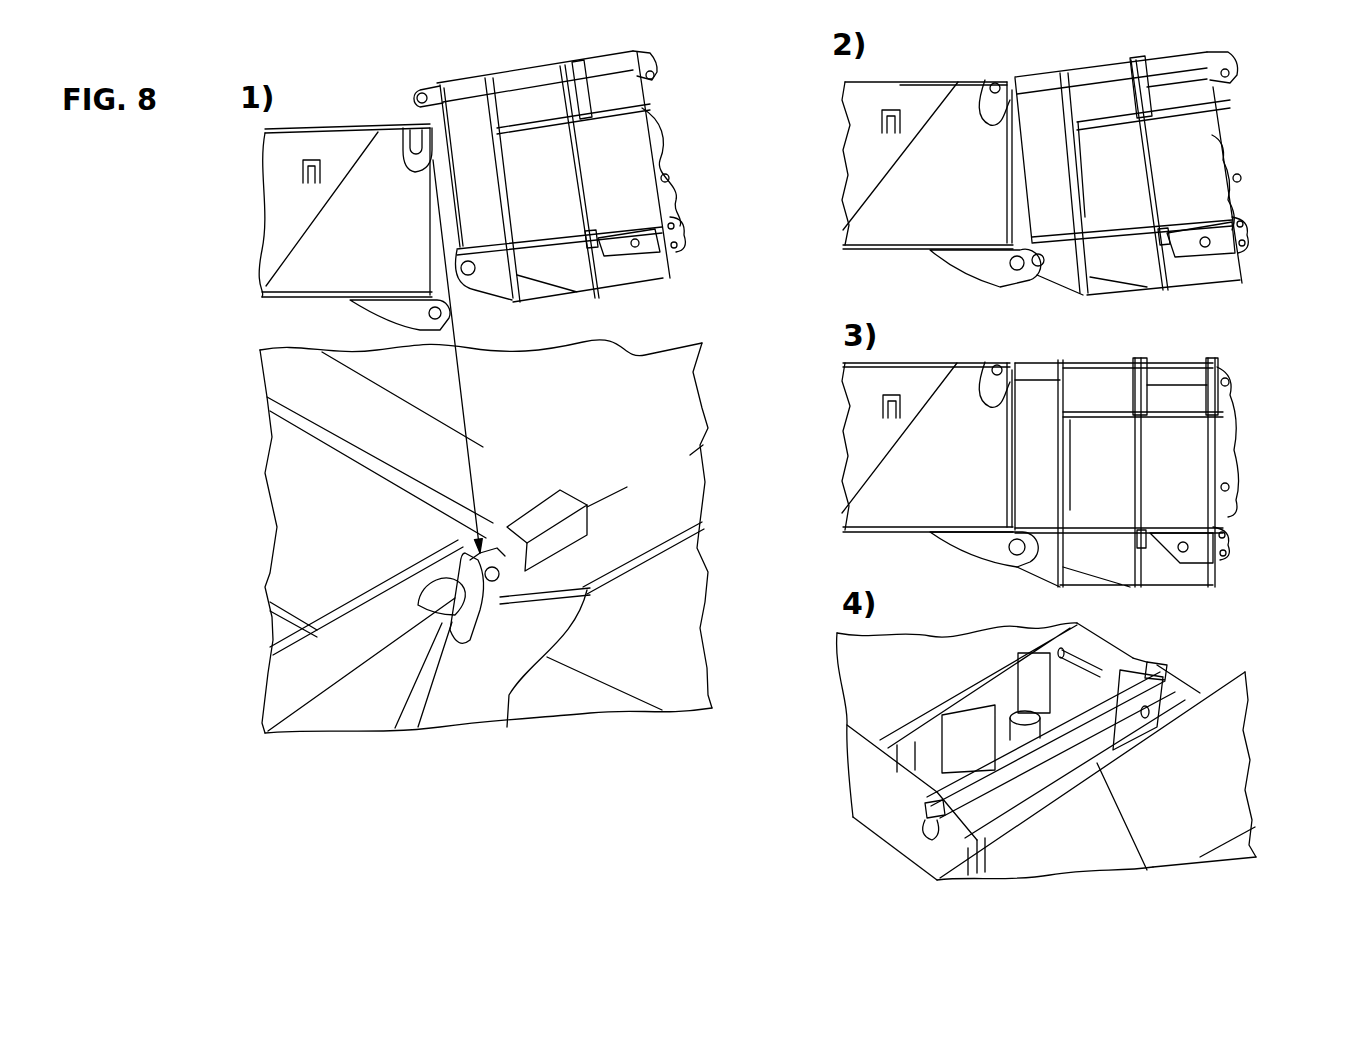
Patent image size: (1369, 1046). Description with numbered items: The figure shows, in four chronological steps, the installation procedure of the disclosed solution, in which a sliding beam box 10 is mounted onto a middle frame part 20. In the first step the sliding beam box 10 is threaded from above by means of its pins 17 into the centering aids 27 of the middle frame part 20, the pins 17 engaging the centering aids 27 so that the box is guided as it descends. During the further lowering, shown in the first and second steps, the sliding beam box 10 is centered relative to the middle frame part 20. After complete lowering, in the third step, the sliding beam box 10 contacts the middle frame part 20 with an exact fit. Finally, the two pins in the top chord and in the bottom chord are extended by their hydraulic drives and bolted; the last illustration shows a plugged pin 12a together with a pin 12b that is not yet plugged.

The sliding beam box 10 is at (543, 108).
The middle frame part 20 is at (327, 257).
The pin 17 is at (490, 582).
The centering aid 27 is at (432, 606).
The plugged pin 12a is at (1123, 680).
The pin not yet plugged 12b is at (945, 795).